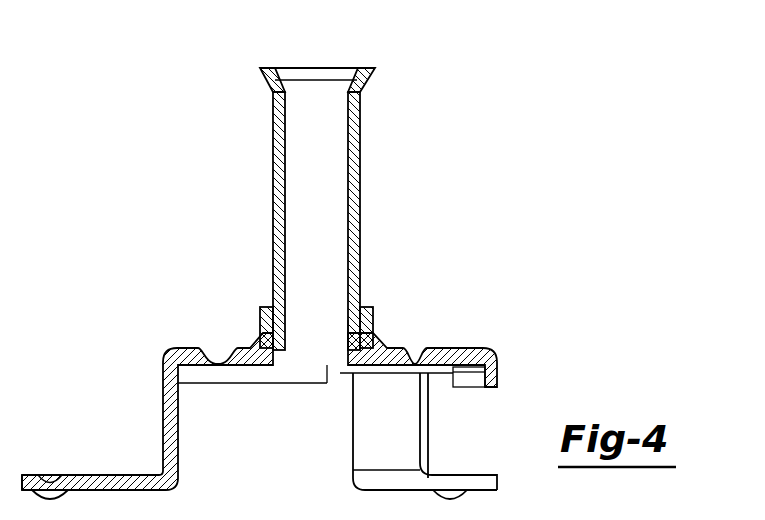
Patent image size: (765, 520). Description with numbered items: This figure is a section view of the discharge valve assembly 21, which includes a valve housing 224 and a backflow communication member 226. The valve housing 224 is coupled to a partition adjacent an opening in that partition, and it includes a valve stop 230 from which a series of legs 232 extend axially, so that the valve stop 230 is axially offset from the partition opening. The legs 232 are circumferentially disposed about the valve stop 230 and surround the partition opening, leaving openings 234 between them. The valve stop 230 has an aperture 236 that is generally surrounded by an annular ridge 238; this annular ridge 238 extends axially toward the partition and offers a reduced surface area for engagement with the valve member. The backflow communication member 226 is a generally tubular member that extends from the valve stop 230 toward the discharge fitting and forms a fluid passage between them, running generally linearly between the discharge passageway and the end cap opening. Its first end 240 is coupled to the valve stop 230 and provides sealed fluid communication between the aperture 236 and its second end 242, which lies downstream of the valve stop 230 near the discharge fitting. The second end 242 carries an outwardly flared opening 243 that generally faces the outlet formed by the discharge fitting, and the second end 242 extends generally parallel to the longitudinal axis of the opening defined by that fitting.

The discharge valve assembly 21 is at (539, 251).
The valve housing 224 is at (388, 318).
The backflow communication member 226 is at (326, 179).
The valve stop 230 is at (259, 387).
The legs 232 is at (212, 447).
The openings 234 is at (383, 436).
The aperture 236 is at (320, 322).
The annular ridge 238 is at (315, 404).
The first end 240 is at (245, 300).
The second end 242 is at (395, 82).
The outwardly flared opening 243 is at (317, 50).